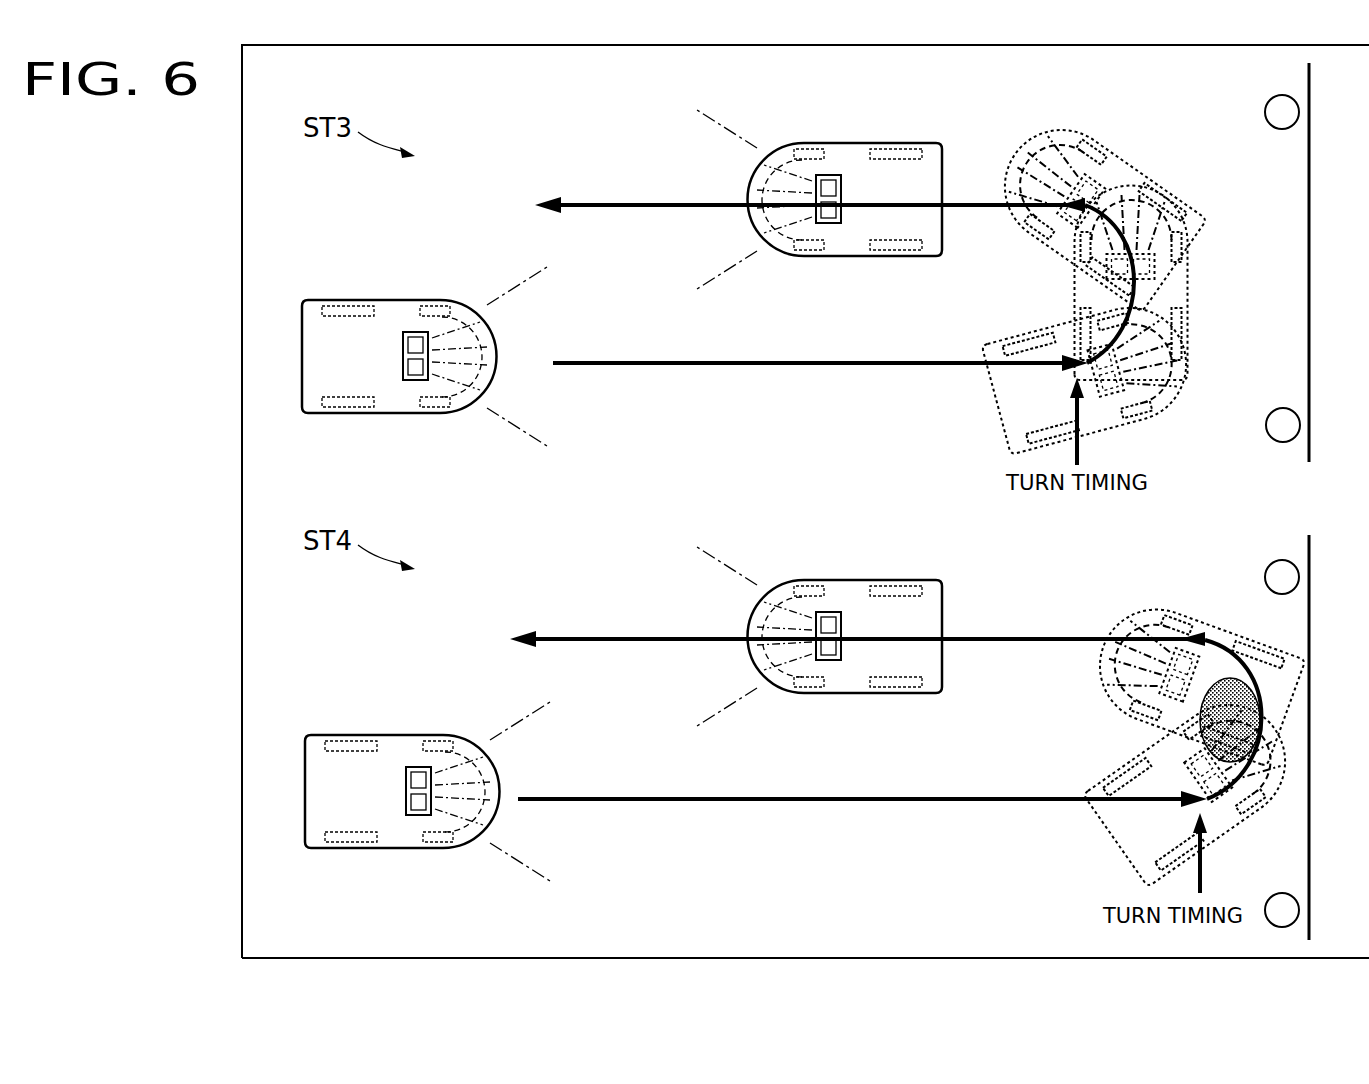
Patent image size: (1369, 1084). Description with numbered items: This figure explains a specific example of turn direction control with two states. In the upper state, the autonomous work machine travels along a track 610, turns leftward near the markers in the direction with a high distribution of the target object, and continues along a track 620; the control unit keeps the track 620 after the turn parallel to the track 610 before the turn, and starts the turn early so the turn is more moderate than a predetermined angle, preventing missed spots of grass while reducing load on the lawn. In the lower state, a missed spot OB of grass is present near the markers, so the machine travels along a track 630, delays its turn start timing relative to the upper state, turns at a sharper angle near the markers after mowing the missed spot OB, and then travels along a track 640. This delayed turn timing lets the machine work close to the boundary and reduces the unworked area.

The track 610 is at (790, 362).
The track 620 is at (605, 203).
The track 630 is at (668, 797).
The track 640 is at (605, 637).
The missed spot of grass OB is at (1200, 698).